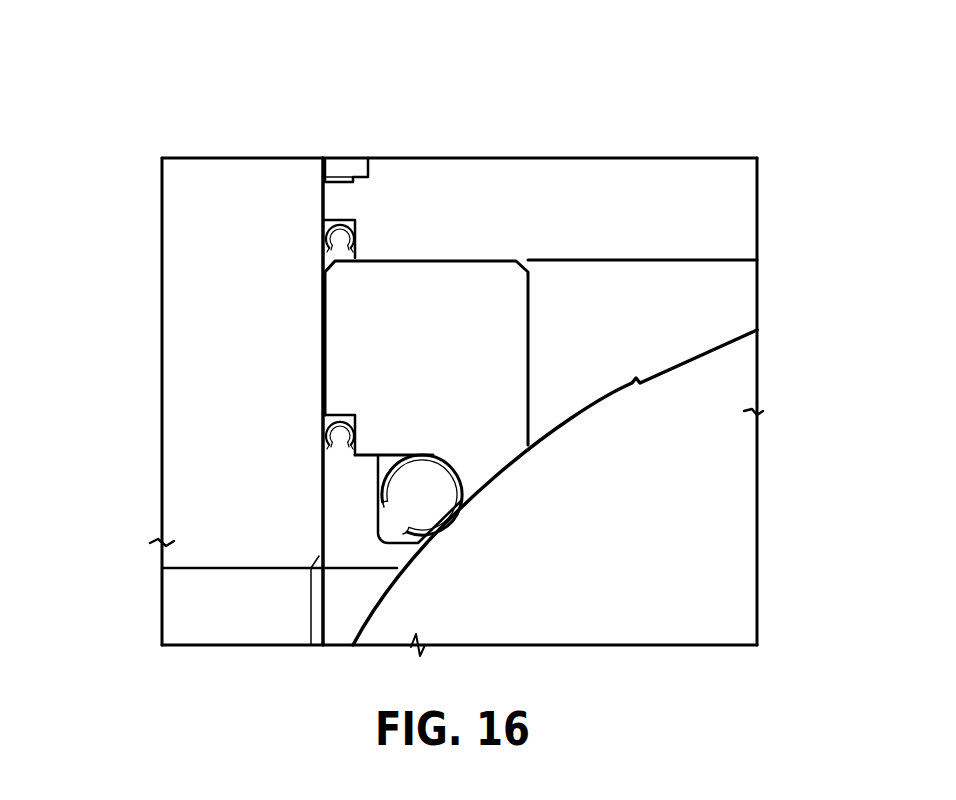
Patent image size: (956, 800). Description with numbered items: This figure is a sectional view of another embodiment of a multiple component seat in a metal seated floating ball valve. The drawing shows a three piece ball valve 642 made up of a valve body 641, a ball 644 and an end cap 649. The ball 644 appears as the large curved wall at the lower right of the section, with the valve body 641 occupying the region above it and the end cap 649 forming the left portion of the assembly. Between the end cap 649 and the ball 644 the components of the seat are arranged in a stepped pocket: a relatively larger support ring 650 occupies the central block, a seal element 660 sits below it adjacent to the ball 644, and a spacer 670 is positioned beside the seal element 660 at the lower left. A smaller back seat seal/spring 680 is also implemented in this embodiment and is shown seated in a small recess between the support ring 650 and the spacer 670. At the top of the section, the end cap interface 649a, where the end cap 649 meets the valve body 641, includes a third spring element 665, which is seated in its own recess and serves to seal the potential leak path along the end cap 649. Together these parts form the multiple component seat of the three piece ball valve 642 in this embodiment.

The three piece ball valve 642 is at (277, 112).
The end cap interface 649a is at (320, 200).
The third spring element 665 is at (320, 235).
The end cap 649 is at (188, 287).
The back seat seal/spring 680 is at (323, 445).
The spacer 670 is at (337, 522).
The support ring 650 is at (452, 373).
The seal element 660 is at (463, 512).
The valve body 641 is at (710, 288).
The ball 644 is at (713, 373).